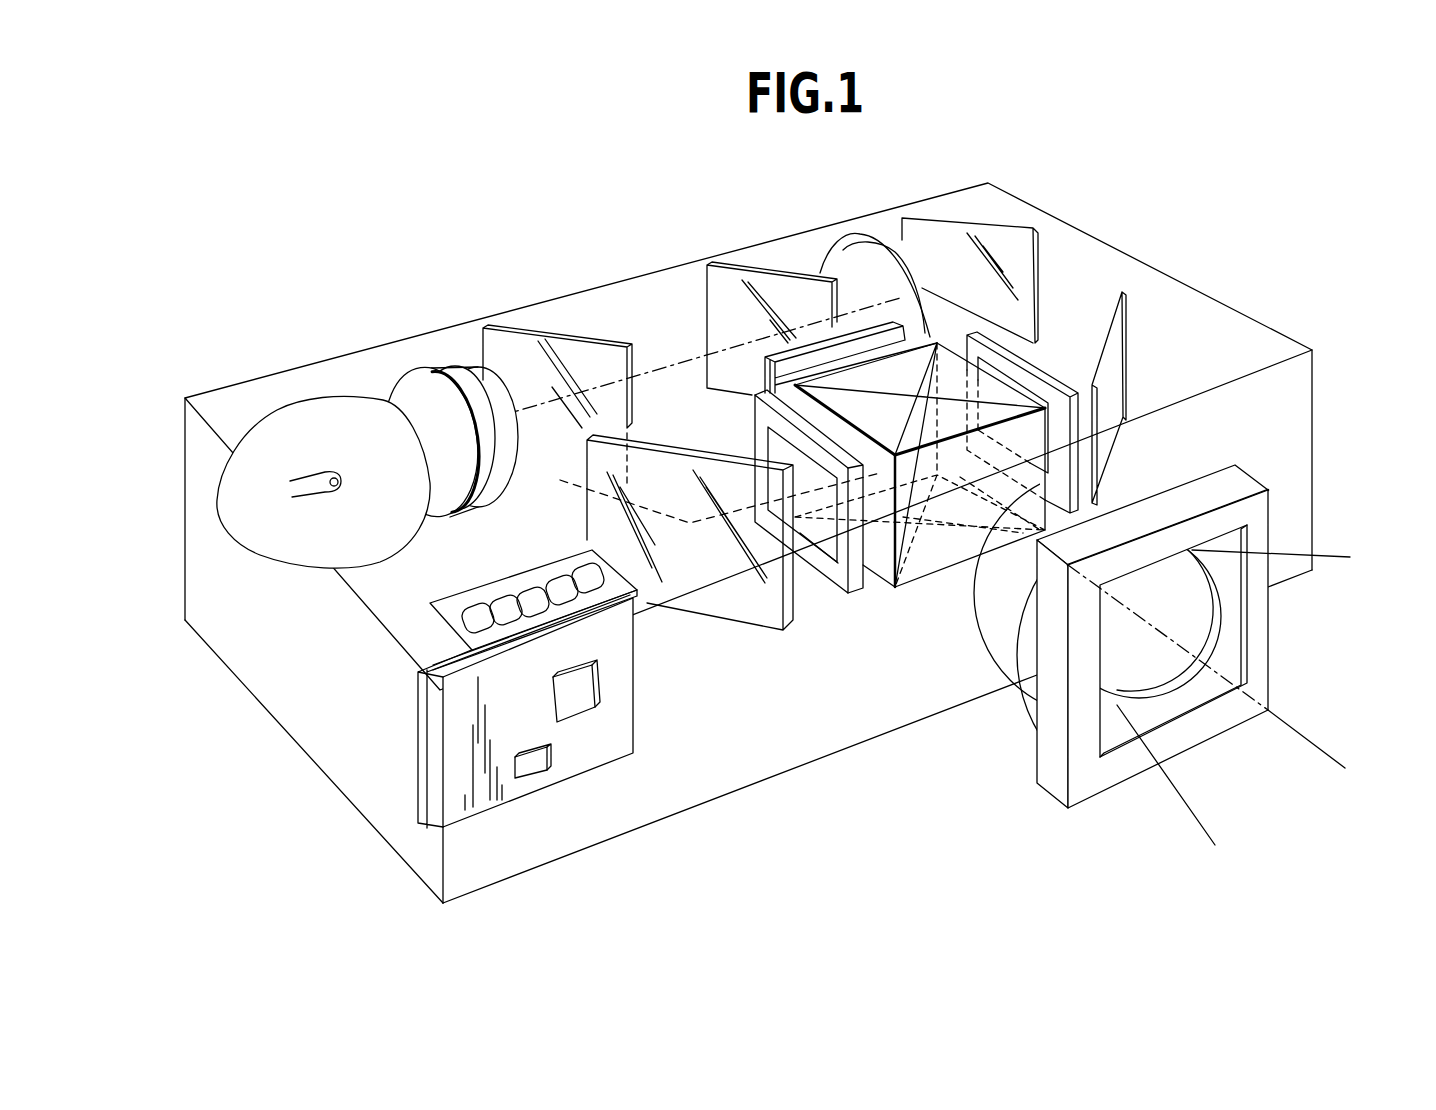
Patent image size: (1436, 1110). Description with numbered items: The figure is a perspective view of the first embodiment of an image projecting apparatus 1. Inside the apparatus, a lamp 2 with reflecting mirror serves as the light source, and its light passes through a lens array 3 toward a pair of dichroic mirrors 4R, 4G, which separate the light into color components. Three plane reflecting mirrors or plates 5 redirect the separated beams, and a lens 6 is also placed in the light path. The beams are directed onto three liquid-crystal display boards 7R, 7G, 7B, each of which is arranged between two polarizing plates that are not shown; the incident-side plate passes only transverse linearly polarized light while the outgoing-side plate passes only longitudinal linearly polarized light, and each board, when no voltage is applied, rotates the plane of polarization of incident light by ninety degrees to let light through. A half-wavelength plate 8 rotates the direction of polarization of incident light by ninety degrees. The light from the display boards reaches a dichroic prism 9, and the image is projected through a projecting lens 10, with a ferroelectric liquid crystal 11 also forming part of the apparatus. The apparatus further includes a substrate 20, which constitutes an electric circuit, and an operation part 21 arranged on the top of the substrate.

The image projecting apparatus 1 is at (887, 737).
The lamp with reflecting mirror 2 is at (306, 411).
The lens array 3 is at (427, 367).
The dichroic mirror 4R is at (543, 333).
The dichroic mirror 4G is at (758, 266).
The plane reflecting mirror 5 is at (718, 613).
The lens 6 is at (861, 234).
The liquid-crystal display board 7R is at (838, 575).
The liquid-crystal display board 7G is at (767, 358).
The liquid-crystal display board 7B is at (1033, 372).
The half-wavelength plate 8 is at (929, 333).
The dichroic prism 9 is at (918, 576).
The projecting lens 10 is at (1157, 486).
The ferroelectric liquid crystal 11 is at (1233, 647).
The substrate 20 is at (418, 713).
The operation part 21 is at (428, 612).